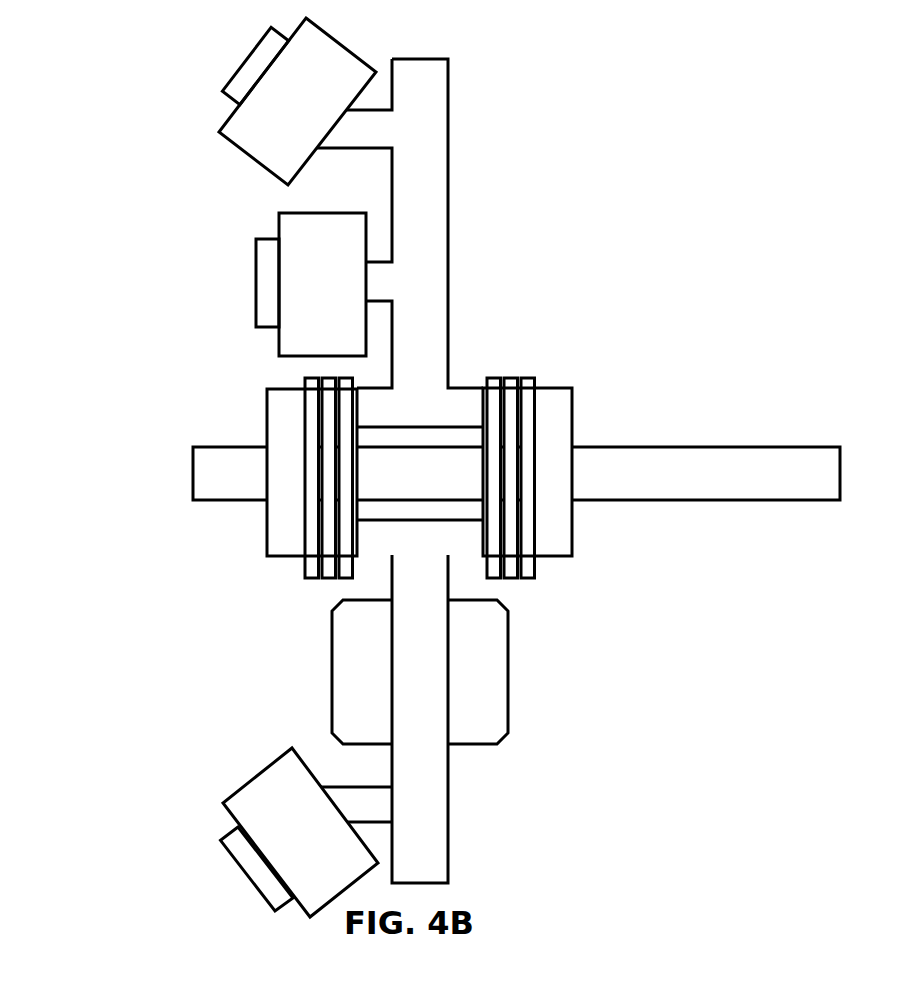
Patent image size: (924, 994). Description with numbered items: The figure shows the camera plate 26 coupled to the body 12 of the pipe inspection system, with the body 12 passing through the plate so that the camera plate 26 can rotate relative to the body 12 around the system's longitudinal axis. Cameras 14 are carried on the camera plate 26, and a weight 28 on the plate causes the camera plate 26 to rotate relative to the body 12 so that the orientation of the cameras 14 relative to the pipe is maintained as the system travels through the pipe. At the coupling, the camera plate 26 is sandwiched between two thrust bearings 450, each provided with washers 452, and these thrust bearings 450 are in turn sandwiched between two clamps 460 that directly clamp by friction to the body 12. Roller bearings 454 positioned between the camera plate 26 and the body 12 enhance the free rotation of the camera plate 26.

The body 12 is at (772, 457).
The cameras 14 is at (327, 60).
The camera plate 26 is at (433, 103).
The weight 28 is at (332, 698).
The thrust bearings 450 is at (513, 373).
The washers 452 is at (490, 367).
The roller bearings 454 is at (410, 420).
The clamps 460 is at (267, 408).